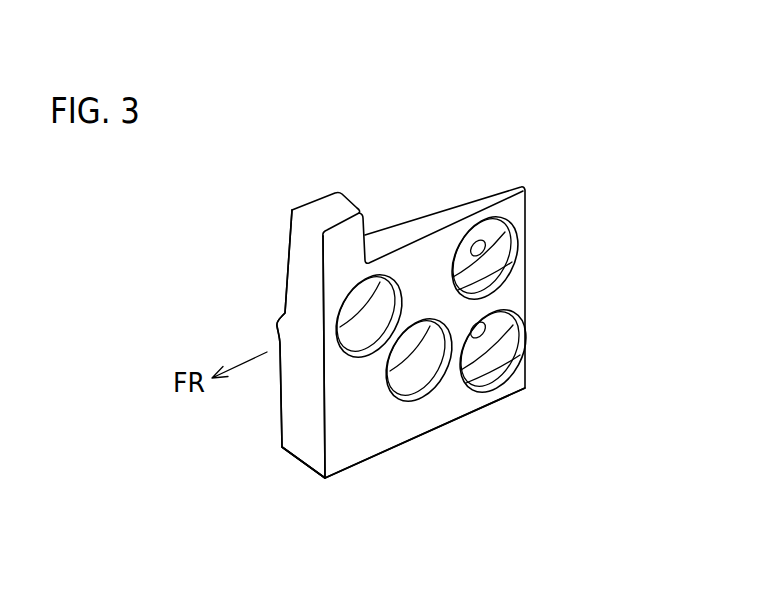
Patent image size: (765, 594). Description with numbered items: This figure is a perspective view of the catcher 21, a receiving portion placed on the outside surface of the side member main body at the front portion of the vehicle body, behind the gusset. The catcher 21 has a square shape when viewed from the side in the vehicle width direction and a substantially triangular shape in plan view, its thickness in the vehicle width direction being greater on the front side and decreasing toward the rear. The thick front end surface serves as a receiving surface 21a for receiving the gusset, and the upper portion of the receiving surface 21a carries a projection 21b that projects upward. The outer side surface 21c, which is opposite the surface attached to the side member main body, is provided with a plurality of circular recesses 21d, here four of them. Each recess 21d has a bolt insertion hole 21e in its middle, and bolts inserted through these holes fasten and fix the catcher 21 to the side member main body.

The catcher 21 is at (500, 418).
The receiving surface 21a is at (285, 404).
The projection 21b is at (320, 206).
The outer side surface 21c is at (362, 452).
The circular recesses 21d is at (495, 266).
The bolt insertion hole 21e is at (479, 326).